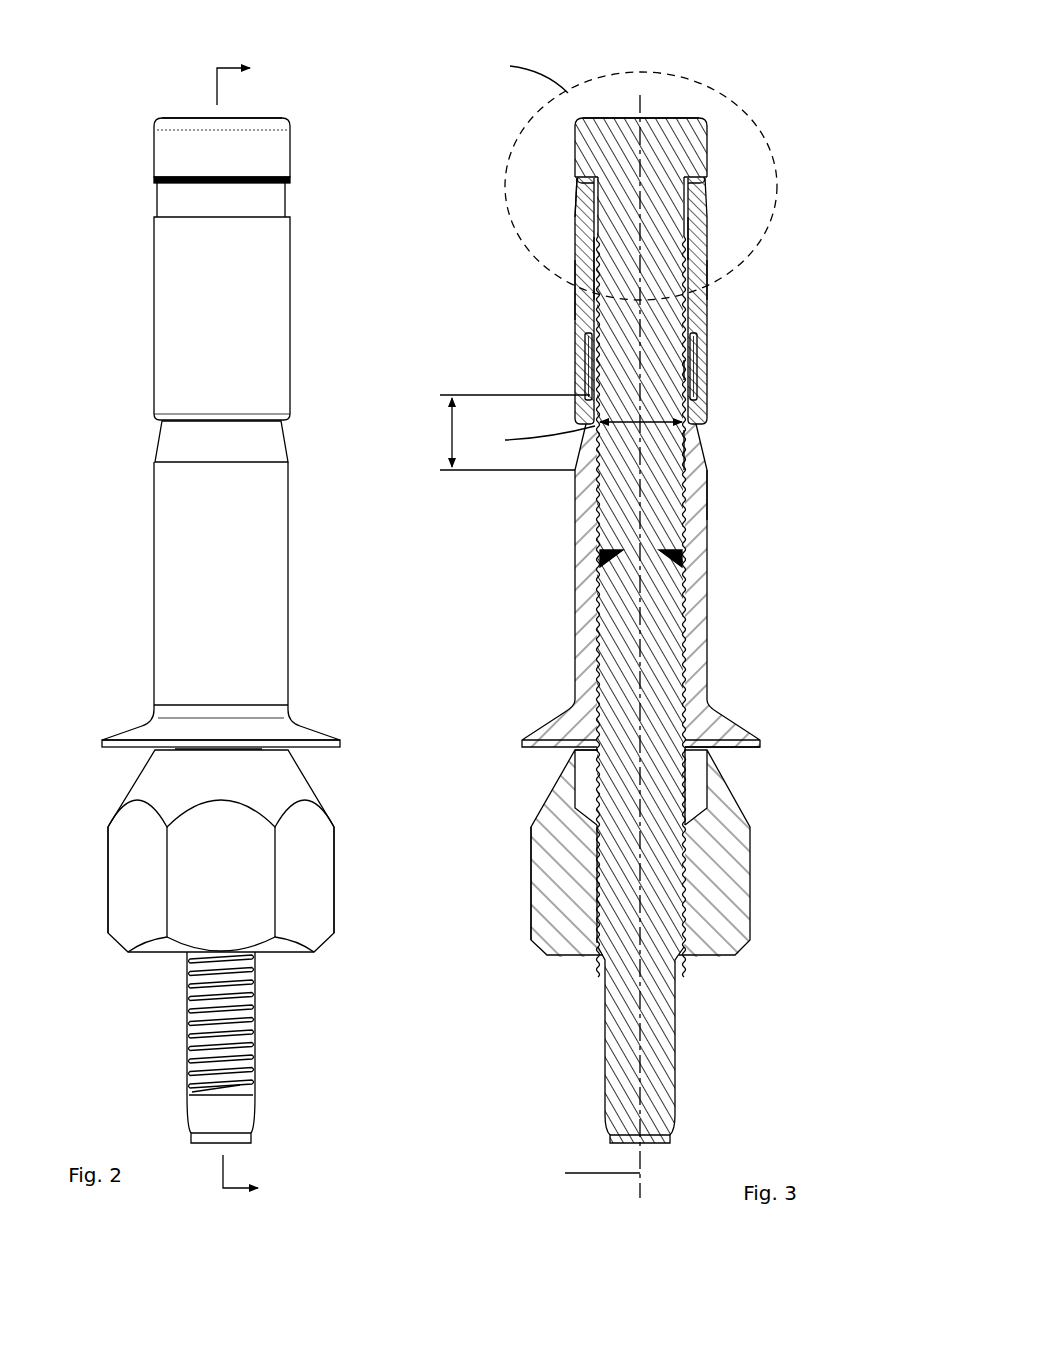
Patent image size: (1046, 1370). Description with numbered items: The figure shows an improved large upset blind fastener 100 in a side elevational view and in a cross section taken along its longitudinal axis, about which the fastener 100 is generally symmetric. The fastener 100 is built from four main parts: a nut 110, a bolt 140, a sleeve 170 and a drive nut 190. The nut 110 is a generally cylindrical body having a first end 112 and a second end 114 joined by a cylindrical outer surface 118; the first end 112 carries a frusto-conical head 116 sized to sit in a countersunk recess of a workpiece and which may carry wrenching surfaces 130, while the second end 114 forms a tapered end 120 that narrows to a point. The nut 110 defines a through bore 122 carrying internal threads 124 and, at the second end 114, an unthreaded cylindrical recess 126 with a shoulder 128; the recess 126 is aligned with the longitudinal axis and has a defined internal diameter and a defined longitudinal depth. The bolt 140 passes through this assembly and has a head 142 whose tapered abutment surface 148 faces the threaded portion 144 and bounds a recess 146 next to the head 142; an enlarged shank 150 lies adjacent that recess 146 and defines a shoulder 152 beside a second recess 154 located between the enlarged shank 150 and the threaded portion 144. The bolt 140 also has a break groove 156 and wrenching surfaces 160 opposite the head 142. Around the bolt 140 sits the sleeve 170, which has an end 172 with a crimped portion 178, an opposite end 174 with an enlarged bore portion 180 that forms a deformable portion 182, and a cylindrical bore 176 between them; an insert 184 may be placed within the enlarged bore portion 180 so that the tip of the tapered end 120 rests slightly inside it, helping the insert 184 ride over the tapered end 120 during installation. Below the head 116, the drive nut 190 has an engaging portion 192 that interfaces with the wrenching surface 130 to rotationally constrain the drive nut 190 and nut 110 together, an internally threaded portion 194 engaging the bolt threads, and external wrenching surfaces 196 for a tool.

In FIG. 2, the fastener 100 is at (297, 88).
In FIG. 3, the fastener 100 is at (712, 68).
In FIG. 2, the nut 110 is at (170, 497).
In FIG. 3, the nut 110 is at (706, 632).
In FIG. 3, the first end 112 is at (764, 707).
In FIG. 3, the second end 114 is at (762, 441).
In FIG. 2, the head 116 is at (130, 722).
In FIG. 3, the head 116 is at (715, 707).
In FIG. 2, the outer surface 118 is at (153, 550).
In FIG. 3, the outer surface 118 is at (706, 662).
In FIG. 2, the tapered end 120 is at (160, 440).
In FIG. 3, the tapered end 120 is at (700, 425).
In FIG. 3, the through bore 122 is at (690, 510).
In FIG. 3, the internal threads 124 is at (596, 515).
In FIG. 3, the recess 126 is at (688, 455).
In FIG. 3, the shoulder 128 is at (703, 493).
In FIG. 3, the wrenching surfaces 130 is at (702, 765).
In FIG. 2, the bolt 140 is at (270, 155).
In FIG. 3, the bolt 140 is at (585, 148).
In FIG. 2, the head 142 is at (165, 150).
In FIG. 3, the head 142 is at (700, 132).
In FIG. 3, the threaded portion 144 is at (695, 365).
In FIG. 3, the recess 146 is at (690, 190).
In FIG. 3, the tapered abutment surface 148 is at (582, 185).
In FIG. 3, the enlarged shank 150 is at (688, 240).
In FIG. 3, the shoulder 152 is at (700, 278).
In FIG. 3, the recess 154 is at (575, 287).
In FIG. 3, the break groove 156 is at (600, 556).
In FIG. 2, the wrenching surfaces 160 is at (255, 1026).
In FIG. 3, the wrenching surfaces 160 is at (675, 1090).
In FIG. 2, the sleeve 170 is at (270, 276).
In FIG. 3, the sleeve 170 is at (708, 311).
In FIG. 3, the end 172 is at (788, 154).
In FIG. 3, the end 174 is at (546, 383).
In FIG. 3, the cylindrical bore 176 is at (597, 247).
In FIG. 3, the crimped portion 178 is at (590, 198).
In FIG. 3, the enlarged bore portion 180 is at (585, 358).
In FIG. 2, the deformable portion 182 is at (305, 323).
In FIG. 3, the deformable portion 182 is at (772, 331).
In FIG. 3, the insert 184 is at (697, 375).
In FIG. 2, the drive nut 190 is at (292, 797).
In FIG. 3, the drive nut 190 is at (735, 919).
In FIG. 2, the engaging portion 192 is at (280, 746).
In FIG. 3, the engaging portion 192 is at (580, 752).
In FIG. 3, the internally threaded portion 194 is at (597, 850).
In FIG. 2, the wrenching surfaces 196 is at (325, 873).
In FIG. 3, the wrenching surfaces 196 is at (532, 921).